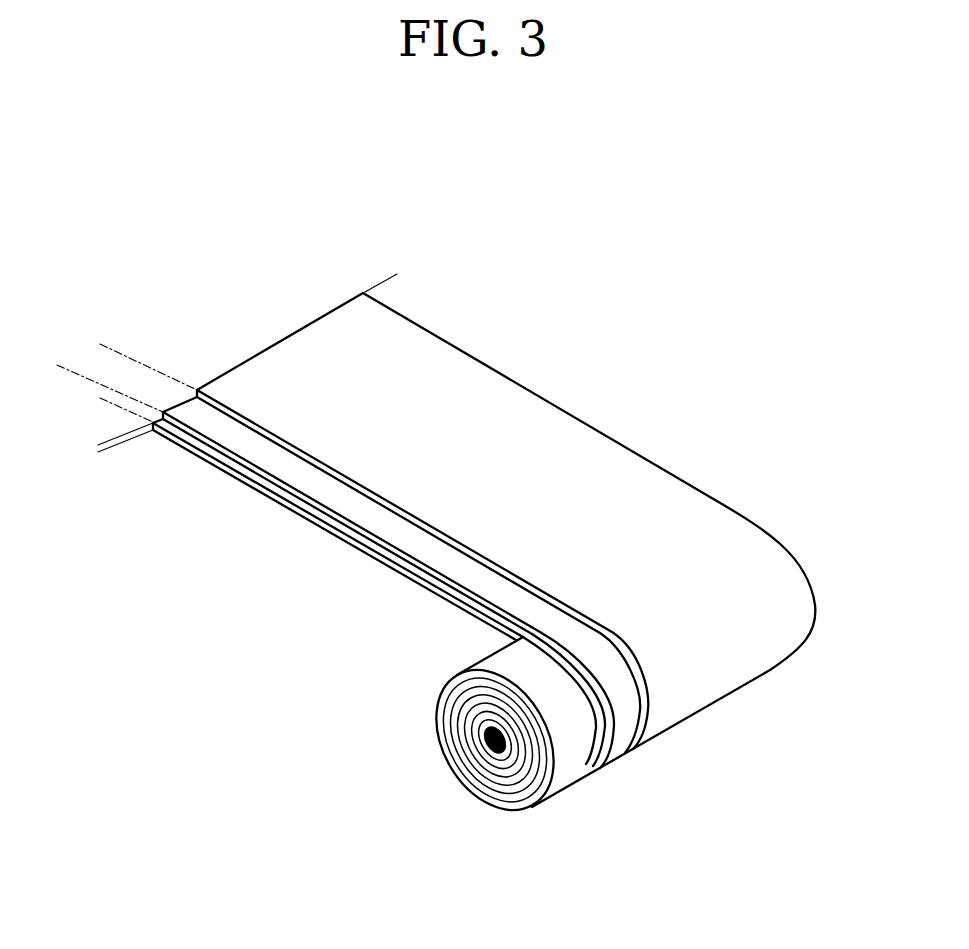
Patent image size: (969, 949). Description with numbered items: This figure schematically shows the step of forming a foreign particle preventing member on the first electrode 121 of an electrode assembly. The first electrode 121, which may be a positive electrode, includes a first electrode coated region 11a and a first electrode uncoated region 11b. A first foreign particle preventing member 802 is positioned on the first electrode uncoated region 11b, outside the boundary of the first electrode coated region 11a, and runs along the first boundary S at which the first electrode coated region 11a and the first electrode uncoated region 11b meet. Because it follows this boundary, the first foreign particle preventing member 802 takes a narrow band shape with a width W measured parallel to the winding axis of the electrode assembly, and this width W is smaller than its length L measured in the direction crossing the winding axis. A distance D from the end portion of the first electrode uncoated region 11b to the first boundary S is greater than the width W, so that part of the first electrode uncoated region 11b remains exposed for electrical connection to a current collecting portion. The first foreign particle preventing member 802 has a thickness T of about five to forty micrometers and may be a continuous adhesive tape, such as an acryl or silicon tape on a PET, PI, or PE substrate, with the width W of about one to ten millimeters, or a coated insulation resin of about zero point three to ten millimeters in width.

The first boundary S is at (219, 400).
The first foreign particle preventing member 802 is at (265, 454).
The first electrode coated region 11a is at (387, 468).
The first electrode uncoated region 11b is at (410, 552).
The first electrode 121 is at (362, 626).
The distance D is at (108, 348).
The width W is at (165, 372).
The thickness T is at (103, 420).
The length L is at (837, 640).